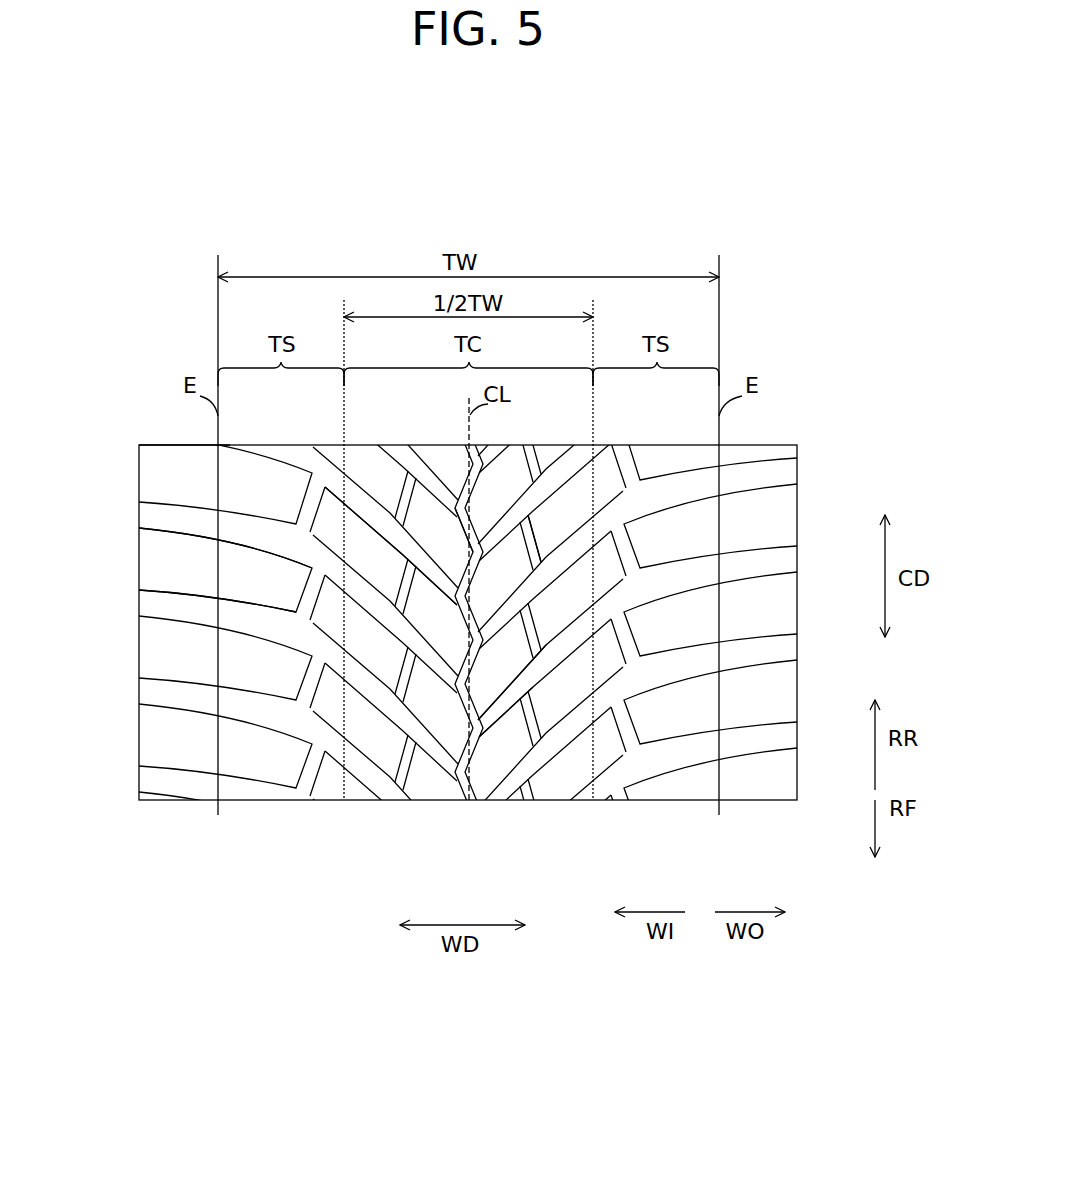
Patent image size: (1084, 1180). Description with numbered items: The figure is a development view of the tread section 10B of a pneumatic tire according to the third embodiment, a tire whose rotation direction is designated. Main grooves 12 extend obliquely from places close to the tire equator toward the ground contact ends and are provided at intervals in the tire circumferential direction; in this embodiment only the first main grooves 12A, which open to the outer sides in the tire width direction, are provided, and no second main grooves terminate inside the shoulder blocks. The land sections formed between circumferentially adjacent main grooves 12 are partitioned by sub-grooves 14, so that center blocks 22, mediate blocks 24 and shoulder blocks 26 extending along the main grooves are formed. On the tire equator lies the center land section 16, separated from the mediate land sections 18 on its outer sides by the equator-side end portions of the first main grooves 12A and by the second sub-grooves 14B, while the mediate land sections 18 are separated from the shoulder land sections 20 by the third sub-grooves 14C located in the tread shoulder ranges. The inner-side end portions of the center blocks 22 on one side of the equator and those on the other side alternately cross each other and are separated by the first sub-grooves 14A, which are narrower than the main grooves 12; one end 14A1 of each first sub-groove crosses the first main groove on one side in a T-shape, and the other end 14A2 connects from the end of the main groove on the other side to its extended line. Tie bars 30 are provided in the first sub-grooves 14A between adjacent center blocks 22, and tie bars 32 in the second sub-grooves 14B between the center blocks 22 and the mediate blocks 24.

The tread section 10B is at (488, 199).
The main grooves 12 is at (168, 603).
The first main grooves 12A is at (755, 475).
The sub-grooves 14 is at (401, 700).
The first sub-grooves 14A is at (520, 700).
The one end of the first sub-groove 14A1 is at (517, 650).
The other end of the first sub-groove 14A2 is at (545, 665).
The second sub-grooves 14B is at (430, 690).
The third sub-grooves 14C is at (311, 500).
The center land section 16 is at (430, 438).
The mediate land sections 18 is at (371, 438).
The shoulder land sections 20 is at (241, 438).
The center blocks 22 is at (420, 612).
The mediate blocks 24 is at (347, 535).
The shoulder blocks 26 is at (162, 483).
The tie bar 30 is at (492, 446).
The tie bar 32 is at (625, 519).